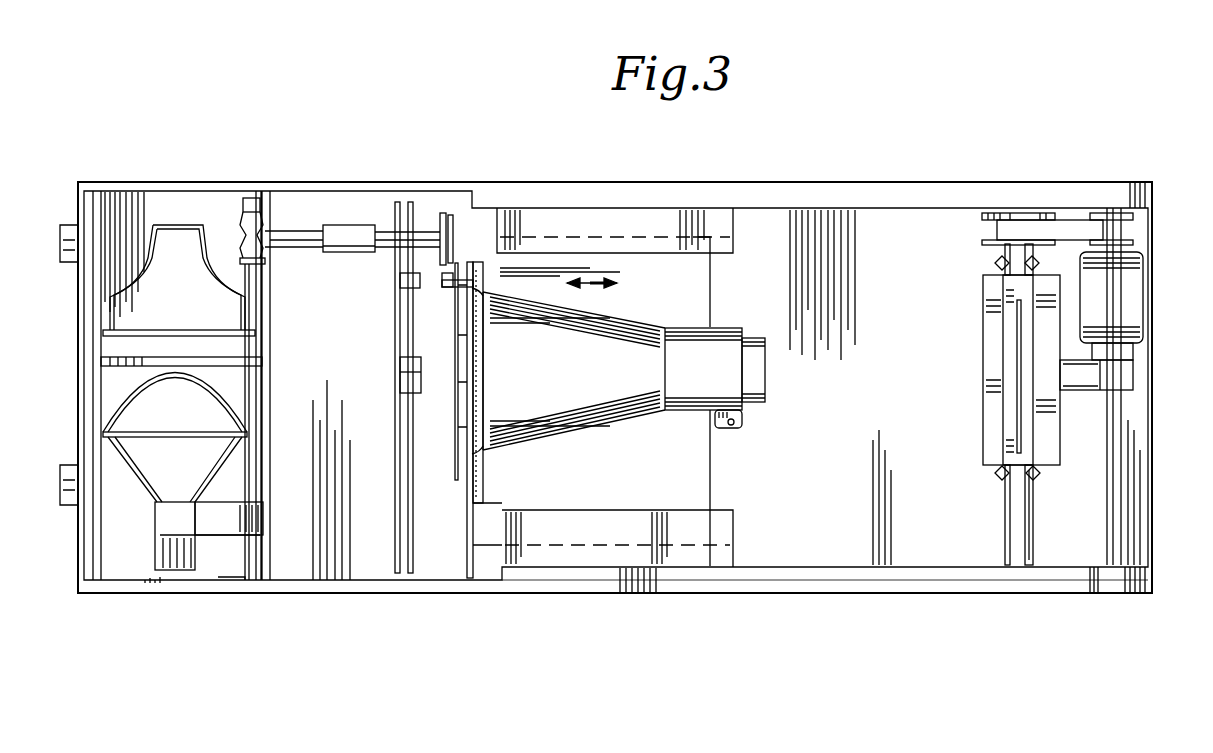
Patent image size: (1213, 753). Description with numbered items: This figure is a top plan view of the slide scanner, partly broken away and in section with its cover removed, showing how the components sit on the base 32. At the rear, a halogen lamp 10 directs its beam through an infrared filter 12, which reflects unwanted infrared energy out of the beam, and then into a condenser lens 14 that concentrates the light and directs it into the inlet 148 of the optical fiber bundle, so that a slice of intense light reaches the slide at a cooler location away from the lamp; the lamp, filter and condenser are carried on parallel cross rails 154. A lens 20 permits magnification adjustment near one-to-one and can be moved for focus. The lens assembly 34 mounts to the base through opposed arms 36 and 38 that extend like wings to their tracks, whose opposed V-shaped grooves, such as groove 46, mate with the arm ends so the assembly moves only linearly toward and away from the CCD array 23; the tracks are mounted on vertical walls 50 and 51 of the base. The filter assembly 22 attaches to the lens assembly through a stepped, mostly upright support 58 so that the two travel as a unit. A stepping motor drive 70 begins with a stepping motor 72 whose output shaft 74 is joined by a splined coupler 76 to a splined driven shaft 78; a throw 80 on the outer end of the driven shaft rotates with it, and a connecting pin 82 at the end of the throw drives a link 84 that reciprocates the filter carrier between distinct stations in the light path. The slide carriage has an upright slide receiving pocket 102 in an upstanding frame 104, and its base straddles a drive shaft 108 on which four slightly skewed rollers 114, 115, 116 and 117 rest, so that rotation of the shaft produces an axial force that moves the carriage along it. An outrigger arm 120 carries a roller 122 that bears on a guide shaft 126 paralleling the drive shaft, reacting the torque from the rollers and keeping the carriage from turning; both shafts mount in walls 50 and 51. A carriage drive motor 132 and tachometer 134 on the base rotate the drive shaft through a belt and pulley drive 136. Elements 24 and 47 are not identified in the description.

The halogen lamp 10 is at (186, 312).
The infrared filter 12 is at (260, 349).
The condenser lens 14 is at (247, 448).
The lens 20 is at (772, 376).
The filter assembly 22 is at (476, 367).
The CCD array 23 is at (421, 390).
The slide block 24 is at (408, 362).
The base 32 is at (1010, 583).
The lens assembly 34 is at (591, 420).
The arm 36 is at (703, 477).
The arm 38 is at (575, 263).
The V-shaped groove 46 is at (720, 222).
The lower housing box 47 is at (722, 547).
The wall 50 is at (1123, 583).
The wall 51 is at (1110, 182).
The support 58 is at (468, 502).
The stepping motor drive 70 is at (292, 224).
The stepping motor 72 is at (253, 200).
The output shaft 74 is at (297, 248).
The splined coupler 76 is at (343, 230).
The driven shaft 78 is at (420, 233).
The throw 80 is at (443, 222).
The connecting pin 82 is at (451, 222).
The link 84 is at (456, 232).
The slide receiving pocket 102 is at (1018, 350).
The upstanding frame 104 is at (987, 417).
The drive shaft 108 is at (1020, 548).
The roller 114 is at (997, 478).
The roller 115 is at (1040, 480).
The roller 116 is at (992, 260).
The roller 117 is at (1037, 259).
The arm 120 is at (1087, 390).
The roller 122 is at (1117, 378).
The guide shaft 126 is at (1120, 473).
The carriage drive motor 132 is at (1143, 296).
The tachometer 134 is at (1130, 351).
The belt and pulley drive 136 is at (1063, 228).
The inlet 148 is at (188, 550).
The cross rails 154 is at (248, 272).